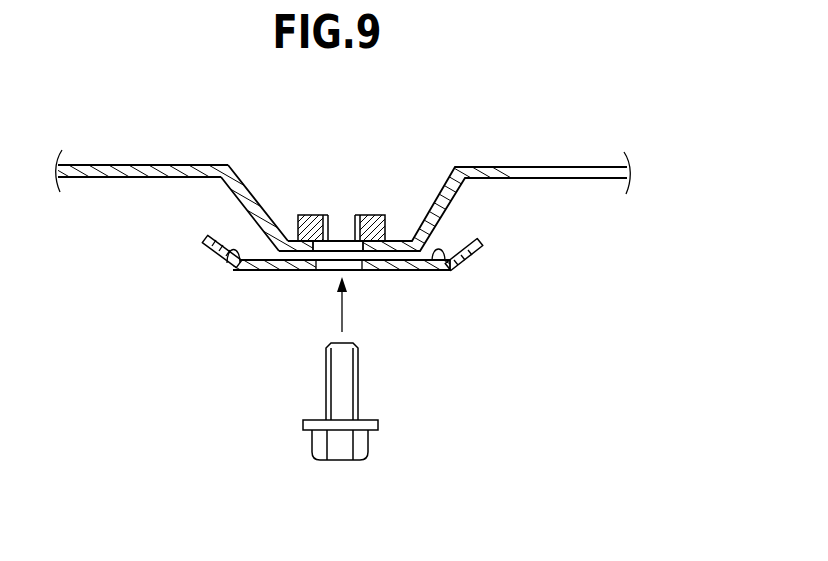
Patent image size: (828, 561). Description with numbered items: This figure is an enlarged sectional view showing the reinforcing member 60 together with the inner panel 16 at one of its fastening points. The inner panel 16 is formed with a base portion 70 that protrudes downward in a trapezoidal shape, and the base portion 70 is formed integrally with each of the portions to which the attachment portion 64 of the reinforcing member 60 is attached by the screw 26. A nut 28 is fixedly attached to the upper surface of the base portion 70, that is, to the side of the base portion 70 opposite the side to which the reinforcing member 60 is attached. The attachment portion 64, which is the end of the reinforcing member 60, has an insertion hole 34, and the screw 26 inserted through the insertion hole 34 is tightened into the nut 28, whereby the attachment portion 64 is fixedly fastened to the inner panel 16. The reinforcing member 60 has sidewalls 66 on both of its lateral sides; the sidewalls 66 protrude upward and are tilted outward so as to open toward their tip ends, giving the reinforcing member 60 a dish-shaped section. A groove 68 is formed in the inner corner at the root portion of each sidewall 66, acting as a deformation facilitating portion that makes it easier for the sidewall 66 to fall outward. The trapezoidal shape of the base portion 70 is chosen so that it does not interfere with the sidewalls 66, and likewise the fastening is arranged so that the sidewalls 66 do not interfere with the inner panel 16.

The inner panel 16 is at (325, 179).
The base portion 70 is at (251, 208).
The nut 28 is at (368, 226).
The reinforcing member 60 is at (326, 298).
The attachment portion 64 is at (300, 261).
The insertion hole 34 is at (353, 273).
The sidewall 66 is at (212, 252).
The groove 68 is at (227, 267).
The screw 26 is at (342, 441).